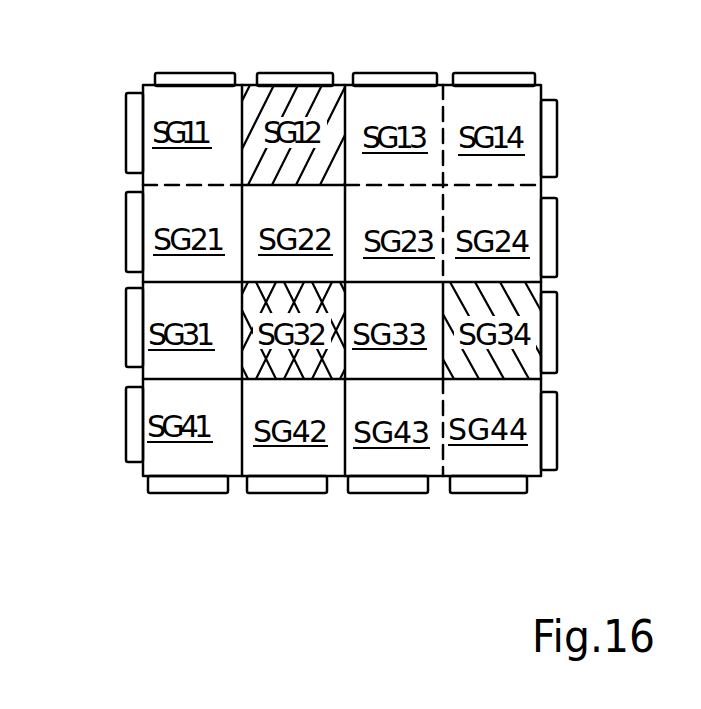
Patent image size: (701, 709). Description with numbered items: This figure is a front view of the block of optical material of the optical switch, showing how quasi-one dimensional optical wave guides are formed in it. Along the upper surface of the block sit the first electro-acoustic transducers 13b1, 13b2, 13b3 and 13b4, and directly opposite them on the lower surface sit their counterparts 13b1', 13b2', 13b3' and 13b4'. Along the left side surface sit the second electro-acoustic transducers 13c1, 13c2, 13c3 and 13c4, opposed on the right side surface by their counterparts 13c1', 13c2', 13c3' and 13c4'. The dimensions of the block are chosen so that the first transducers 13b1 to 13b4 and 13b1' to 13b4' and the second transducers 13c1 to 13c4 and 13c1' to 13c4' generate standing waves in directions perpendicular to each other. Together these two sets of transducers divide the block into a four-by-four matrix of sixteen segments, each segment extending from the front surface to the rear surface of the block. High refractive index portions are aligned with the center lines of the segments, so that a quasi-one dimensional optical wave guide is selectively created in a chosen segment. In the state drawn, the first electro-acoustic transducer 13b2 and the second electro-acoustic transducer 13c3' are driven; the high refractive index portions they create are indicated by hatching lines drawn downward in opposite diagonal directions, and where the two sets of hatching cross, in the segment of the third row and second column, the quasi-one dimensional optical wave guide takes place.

The first electro-acoustic transducer 13b1 is at (194, 54).
The first electro-acoustic transducer 13b2 is at (295, 51).
The first electro-acoustic transducer 13b3 is at (395, 53).
The first electro-acoustic transducer 13b4 is at (494, 54).
The first electro-acoustic transducer 13b1' is at (185, 517).
The first electro-acoustic transducer 13b2' is at (287, 518).
The first electro-acoustic transducer 13b3' is at (389, 524).
The first electro-acoustic transducer 13b4' is at (497, 518).
The second electro-acoustic transducer 13c1 is at (85, 133).
The second electro-acoustic transducer 13c2 is at (87, 232).
The second electro-acoustic transducer 13c3 is at (90, 327).
The second electro-acoustic transducer 13c4 is at (90, 425).
The second electro-acoustic transducer 13c1' is at (592, 138).
The second electro-acoustic transducer 13c2' is at (596, 237).
The second electro-acoustic transducer 13c3' is at (597, 332).
The second electro-acoustic transducer 13c4' is at (600, 431).